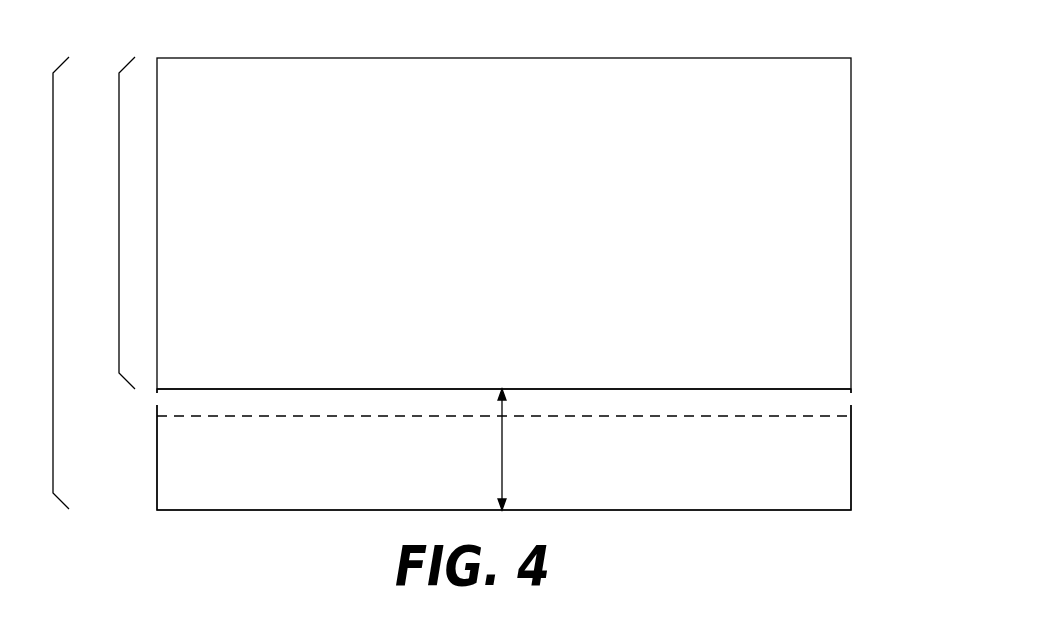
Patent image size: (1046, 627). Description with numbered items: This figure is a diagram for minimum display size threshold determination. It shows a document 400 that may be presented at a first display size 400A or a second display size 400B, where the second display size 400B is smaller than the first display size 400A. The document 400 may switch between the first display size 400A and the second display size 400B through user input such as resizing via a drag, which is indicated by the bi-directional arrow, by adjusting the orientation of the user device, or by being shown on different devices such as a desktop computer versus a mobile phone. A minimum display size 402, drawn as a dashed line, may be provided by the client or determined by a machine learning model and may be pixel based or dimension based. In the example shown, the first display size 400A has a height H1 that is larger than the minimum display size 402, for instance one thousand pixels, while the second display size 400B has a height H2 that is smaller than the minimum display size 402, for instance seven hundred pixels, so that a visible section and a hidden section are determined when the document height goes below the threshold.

The document 400 is at (797, 32).
The first display size 400A is at (851, 465).
The second display size 400B is at (851, 205).
The minimum display size 402 is at (851, 415).
The height H1 is at (53, 277).
The height H2 is at (119, 218).